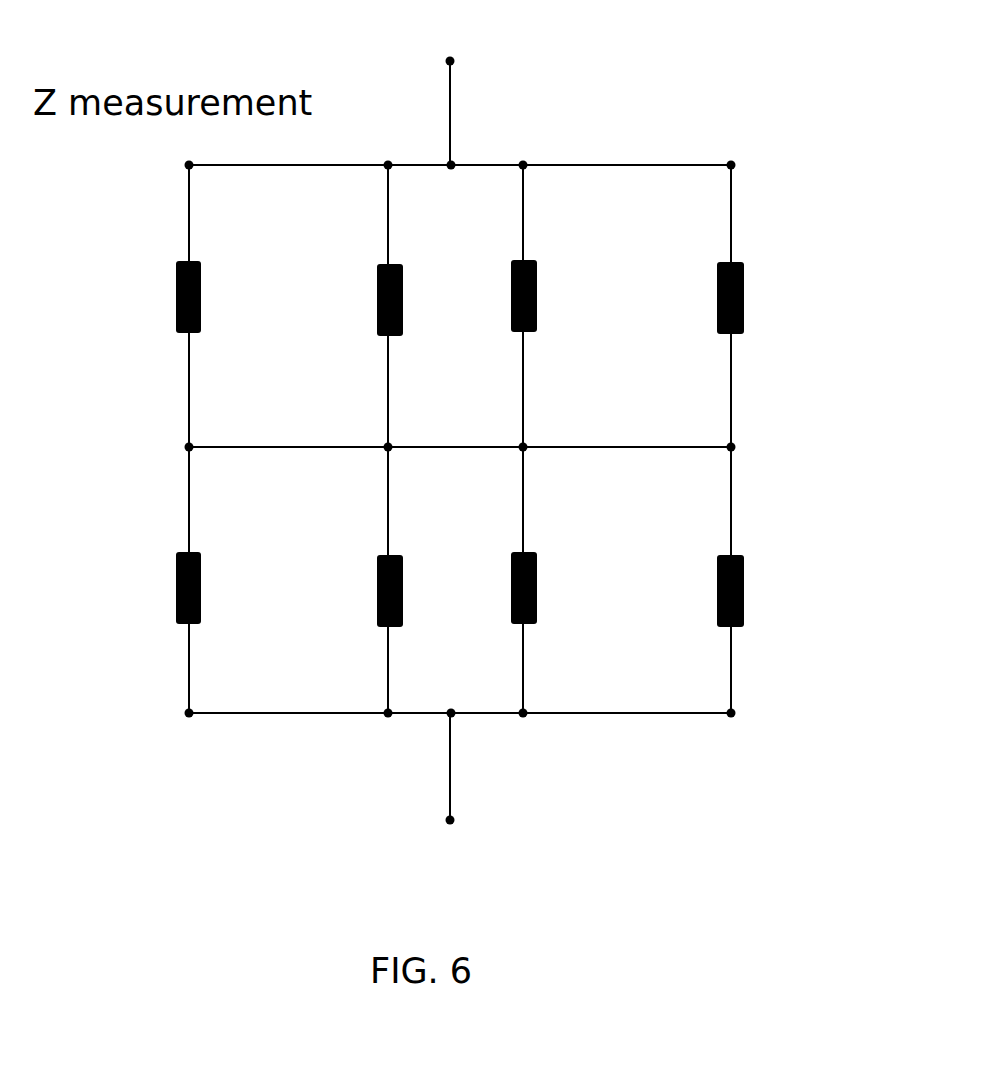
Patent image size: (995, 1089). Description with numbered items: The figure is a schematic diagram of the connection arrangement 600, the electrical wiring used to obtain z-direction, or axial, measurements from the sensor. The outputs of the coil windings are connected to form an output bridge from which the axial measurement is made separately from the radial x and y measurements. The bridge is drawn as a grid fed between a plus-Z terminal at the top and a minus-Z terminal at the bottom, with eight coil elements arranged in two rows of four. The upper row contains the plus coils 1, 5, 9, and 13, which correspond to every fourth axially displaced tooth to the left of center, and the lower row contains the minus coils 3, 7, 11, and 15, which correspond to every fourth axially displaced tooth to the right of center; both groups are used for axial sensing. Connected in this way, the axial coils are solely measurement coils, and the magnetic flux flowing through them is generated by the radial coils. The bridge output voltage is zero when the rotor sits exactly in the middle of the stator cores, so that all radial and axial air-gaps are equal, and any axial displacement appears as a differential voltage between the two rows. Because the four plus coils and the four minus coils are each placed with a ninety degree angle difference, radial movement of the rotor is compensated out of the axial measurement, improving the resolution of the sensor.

The connection arrangement 600 is at (640, 108).
The tooth 1 is at (211, 297).
The tooth 3 is at (211, 588).
The tooth 5 is at (407, 300).
The tooth 7 is at (408, 591).
The tooth 9 is at (542, 296).
The tooth 11 is at (571, 588).
The tooth 13 is at (765, 298).
The tooth 15 is at (765, 591).